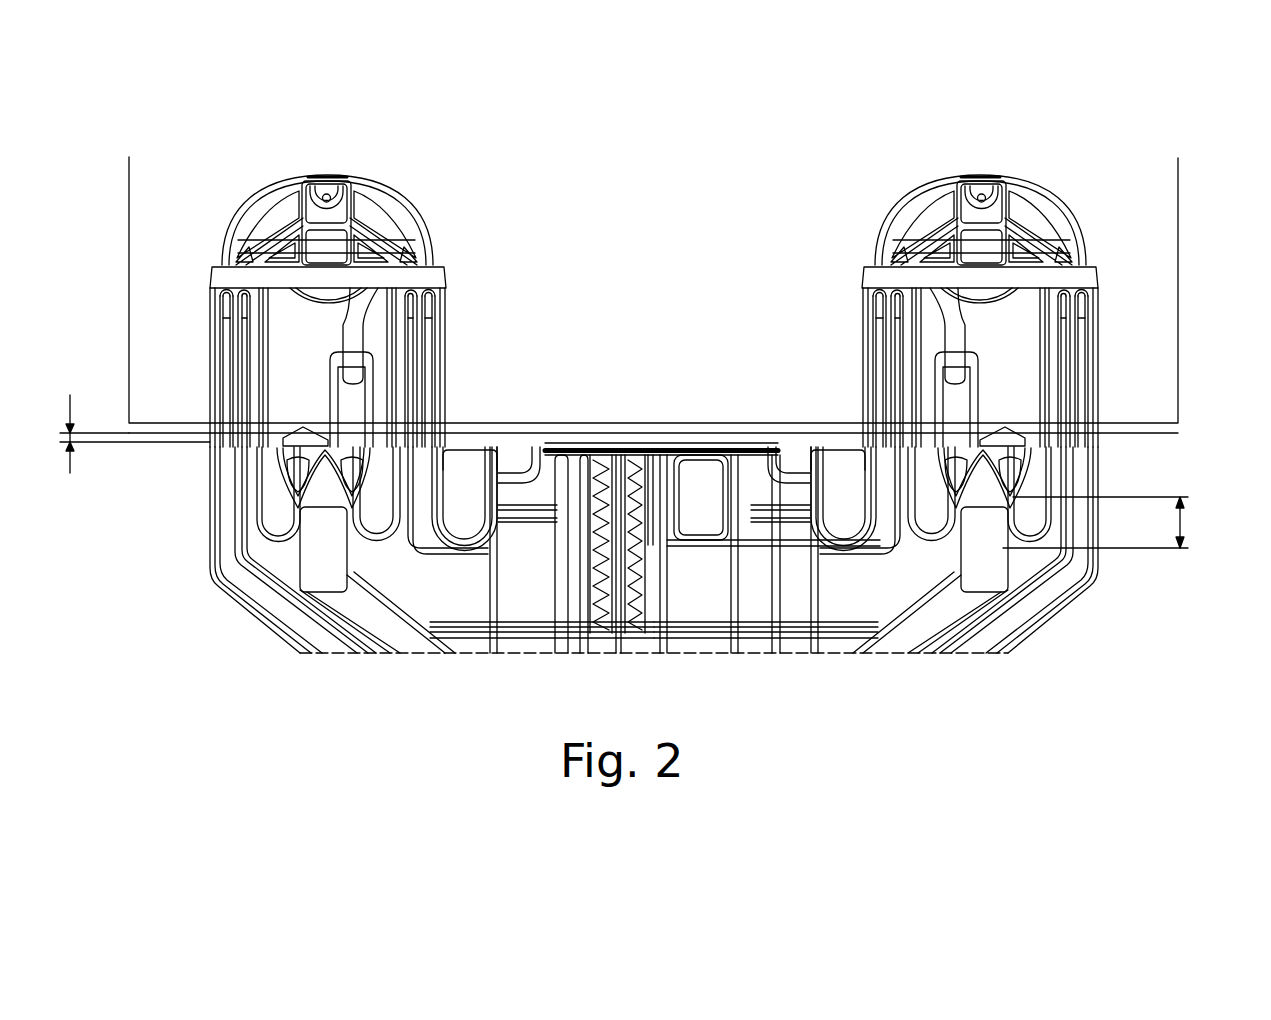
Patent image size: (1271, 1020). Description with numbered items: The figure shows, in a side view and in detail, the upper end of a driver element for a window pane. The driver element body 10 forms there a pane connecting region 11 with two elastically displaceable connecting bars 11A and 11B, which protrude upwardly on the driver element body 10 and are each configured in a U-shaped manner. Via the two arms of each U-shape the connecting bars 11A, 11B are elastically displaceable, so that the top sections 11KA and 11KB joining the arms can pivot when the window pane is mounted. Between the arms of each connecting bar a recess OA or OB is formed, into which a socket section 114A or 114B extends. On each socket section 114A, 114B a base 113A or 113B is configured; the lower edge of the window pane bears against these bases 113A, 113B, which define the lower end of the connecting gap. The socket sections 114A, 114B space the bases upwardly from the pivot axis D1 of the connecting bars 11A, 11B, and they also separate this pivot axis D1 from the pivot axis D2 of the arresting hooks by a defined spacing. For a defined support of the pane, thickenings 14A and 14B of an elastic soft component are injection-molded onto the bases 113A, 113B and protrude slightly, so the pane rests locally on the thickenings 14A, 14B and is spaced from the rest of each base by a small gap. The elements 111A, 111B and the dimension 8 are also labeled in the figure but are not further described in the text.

The driver element body 10 is at (1048, 637).
The pane connecting region 11 is at (163, 320).
The connecting bar 11A is at (950, 177).
The connecting bar 11B is at (297, 176).
The top section 11KA is at (1043, 193).
The top section 11KB is at (387, 210).
The recess OA is at (1020, 343).
The recess OB is at (297, 305).
The first tongue 111A is at (940, 370).
The second tongue 111B is at (367, 380).
The base 113A is at (968, 437).
The base 113B is at (345, 437).
The thickening 14A is at (300, 437).
The thickening 14B is at (1030, 440).
The socket section 114A is at (305, 507).
The socket section 114B is at (1013, 515).
The gap 8 is at (131, 432).
The pivot axis D1 is at (1185, 550).
The pivot axis D2 is at (1185, 498).